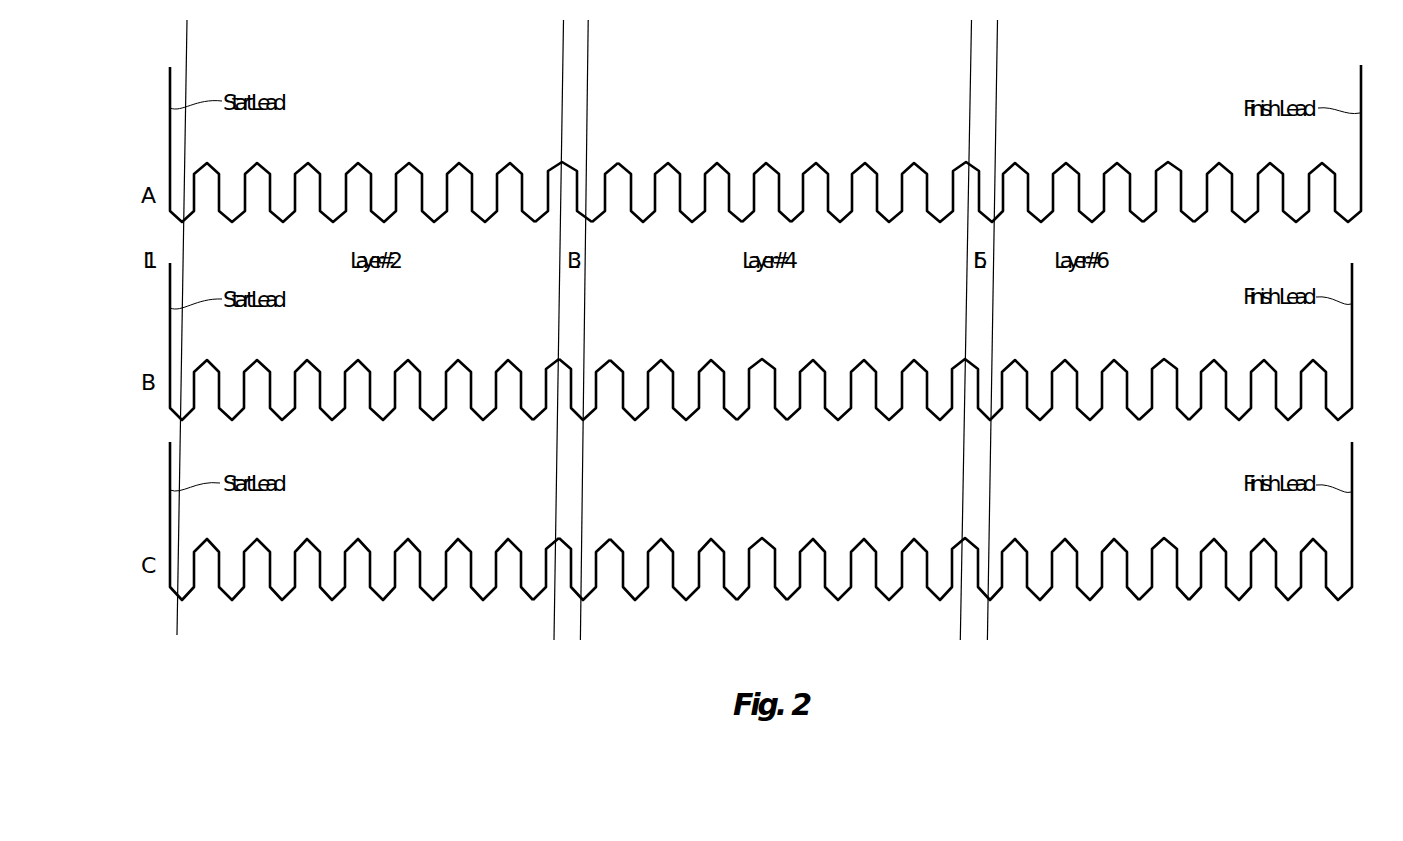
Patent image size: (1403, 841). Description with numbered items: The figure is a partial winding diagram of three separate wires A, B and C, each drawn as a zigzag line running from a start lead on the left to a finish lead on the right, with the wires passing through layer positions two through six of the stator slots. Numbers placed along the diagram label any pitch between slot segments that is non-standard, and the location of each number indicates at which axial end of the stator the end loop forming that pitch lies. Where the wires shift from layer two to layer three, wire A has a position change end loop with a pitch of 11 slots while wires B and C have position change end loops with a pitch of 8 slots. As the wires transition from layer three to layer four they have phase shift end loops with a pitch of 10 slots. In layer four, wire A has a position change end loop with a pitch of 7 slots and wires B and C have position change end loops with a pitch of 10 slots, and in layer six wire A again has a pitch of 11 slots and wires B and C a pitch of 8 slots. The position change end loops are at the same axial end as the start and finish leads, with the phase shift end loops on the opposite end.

The position change end loop pitch of 7 slots 7 is at (766, 192).
The position change end loop pitch of 8 slots 8 is at (861, 479).
The pitch of 10 slots 10 is at (673, 381).
The position change end loop pitch of 11 slots 11 is at (864, 192).